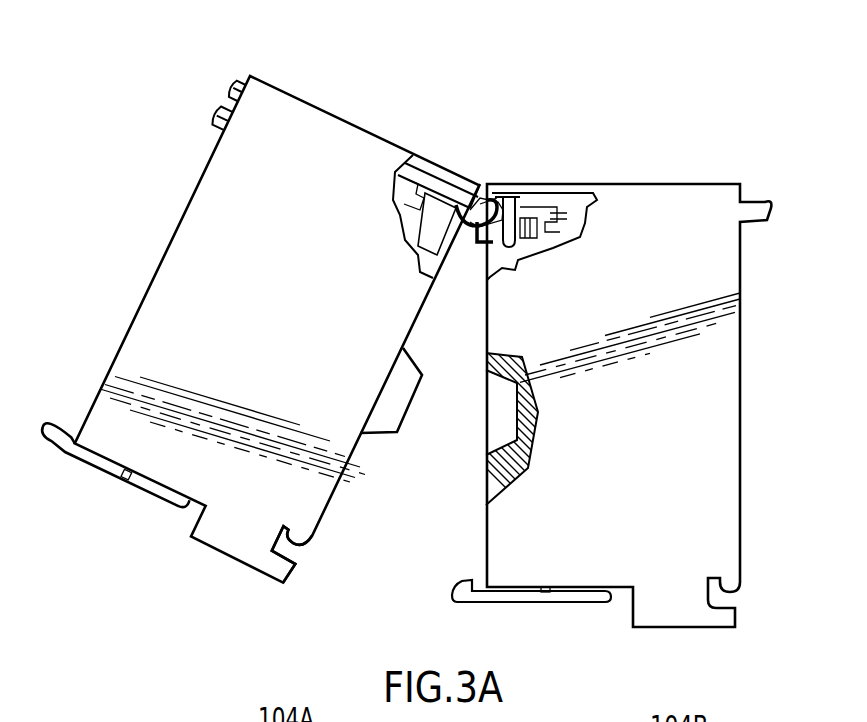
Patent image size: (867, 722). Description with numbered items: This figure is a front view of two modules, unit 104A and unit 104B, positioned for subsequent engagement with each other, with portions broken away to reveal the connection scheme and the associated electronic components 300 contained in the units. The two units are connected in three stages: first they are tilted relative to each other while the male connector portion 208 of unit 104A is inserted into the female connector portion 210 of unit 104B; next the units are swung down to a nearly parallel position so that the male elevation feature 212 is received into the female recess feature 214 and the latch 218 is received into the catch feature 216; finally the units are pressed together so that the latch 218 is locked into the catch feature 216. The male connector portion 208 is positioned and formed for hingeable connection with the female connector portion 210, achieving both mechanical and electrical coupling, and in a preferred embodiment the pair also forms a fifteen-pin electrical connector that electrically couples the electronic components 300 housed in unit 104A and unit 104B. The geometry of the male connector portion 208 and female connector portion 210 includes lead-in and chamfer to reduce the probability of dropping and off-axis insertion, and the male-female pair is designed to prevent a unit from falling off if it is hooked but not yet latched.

The unit 104A is at (378, 112).
The unit 104B is at (662, 158).
The electronic components 300 is at (415, 167).
The male connector portion 208 is at (470, 193).
The female connector portion 210 is at (560, 184).
The male elevation feature 212 is at (393, 391).
The female recess feature 214 is at (502, 412).
The catch feature 216 is at (290, 552).
The latch 218 is at (540, 605).